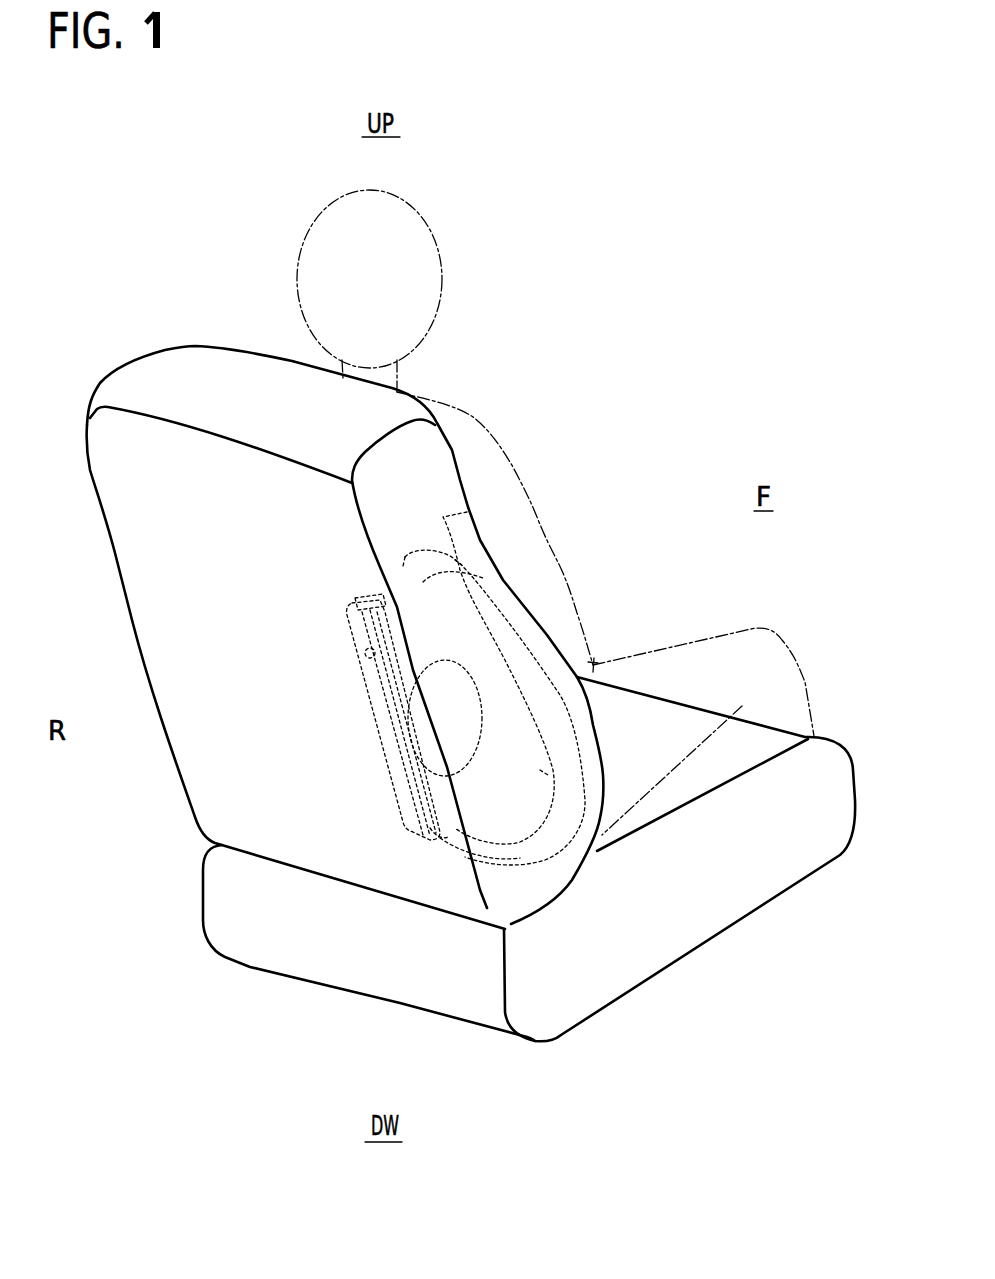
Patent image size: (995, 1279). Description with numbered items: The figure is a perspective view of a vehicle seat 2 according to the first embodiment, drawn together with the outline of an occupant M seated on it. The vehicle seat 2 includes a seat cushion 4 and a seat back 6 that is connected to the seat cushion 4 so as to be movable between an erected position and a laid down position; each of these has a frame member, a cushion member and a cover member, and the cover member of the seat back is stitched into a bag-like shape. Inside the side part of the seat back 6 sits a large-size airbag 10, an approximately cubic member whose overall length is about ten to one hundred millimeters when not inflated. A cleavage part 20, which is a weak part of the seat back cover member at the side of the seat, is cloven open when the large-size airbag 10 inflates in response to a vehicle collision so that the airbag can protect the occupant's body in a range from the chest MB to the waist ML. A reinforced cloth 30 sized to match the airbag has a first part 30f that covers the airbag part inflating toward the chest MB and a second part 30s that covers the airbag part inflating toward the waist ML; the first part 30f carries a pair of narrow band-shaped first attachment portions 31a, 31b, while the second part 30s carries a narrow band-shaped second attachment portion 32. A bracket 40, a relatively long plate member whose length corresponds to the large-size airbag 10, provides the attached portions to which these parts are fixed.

The vehicle seat 2 is at (241, 341).
The seat cushion 4 is at (407, 957).
The seat back 6 is at (183, 530).
The large-size airbag 10 is at (407, 553).
The cleavage part 20 is at (467, 512).
The reinforced cloth 30 is at (262, 571).
The first part 30f is at (462, 590).
The second part 30s is at (555, 766).
The first attachment portion 31a is at (375, 600).
The first attachment portion 31b is at (360, 637).
The second attachment portion 32 is at (483, 807).
The bracket 40 is at (383, 700).
The occupant head M is at (417, 211).
The chest MB is at (516, 484).
The waist ML is at (587, 646).